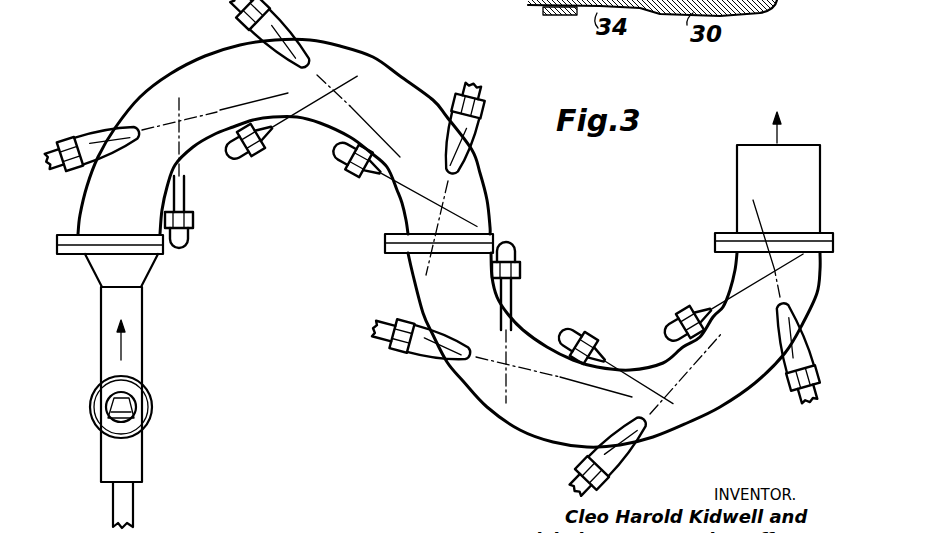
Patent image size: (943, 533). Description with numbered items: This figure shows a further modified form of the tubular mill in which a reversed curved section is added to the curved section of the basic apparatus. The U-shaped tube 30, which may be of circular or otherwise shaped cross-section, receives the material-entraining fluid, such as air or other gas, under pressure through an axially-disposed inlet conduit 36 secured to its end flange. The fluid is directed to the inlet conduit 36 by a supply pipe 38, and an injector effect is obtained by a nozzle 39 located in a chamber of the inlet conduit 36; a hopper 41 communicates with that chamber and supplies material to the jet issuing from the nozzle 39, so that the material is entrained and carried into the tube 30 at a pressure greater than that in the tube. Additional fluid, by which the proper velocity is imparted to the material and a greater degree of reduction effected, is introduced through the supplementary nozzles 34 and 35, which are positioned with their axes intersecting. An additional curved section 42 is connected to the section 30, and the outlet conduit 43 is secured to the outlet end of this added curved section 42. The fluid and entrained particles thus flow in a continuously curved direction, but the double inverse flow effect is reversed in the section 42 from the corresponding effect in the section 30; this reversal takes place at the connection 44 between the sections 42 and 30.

The U-shaped tube 30 is at (392, 100).
The supplementary nozzle 34 is at (92, 142).
The supplementary nozzle 35 is at (376, 176).
The inlet conduit 36 is at (135, 322).
The supply pipe 38 is at (130, 503).
The nozzle 39 is at (131, 400).
The hopper 41 is at (143, 414).
The additional curved section 42 is at (560, 422).
The outlet conduit 43 is at (766, 168).
The connection 44 is at (386, 244).